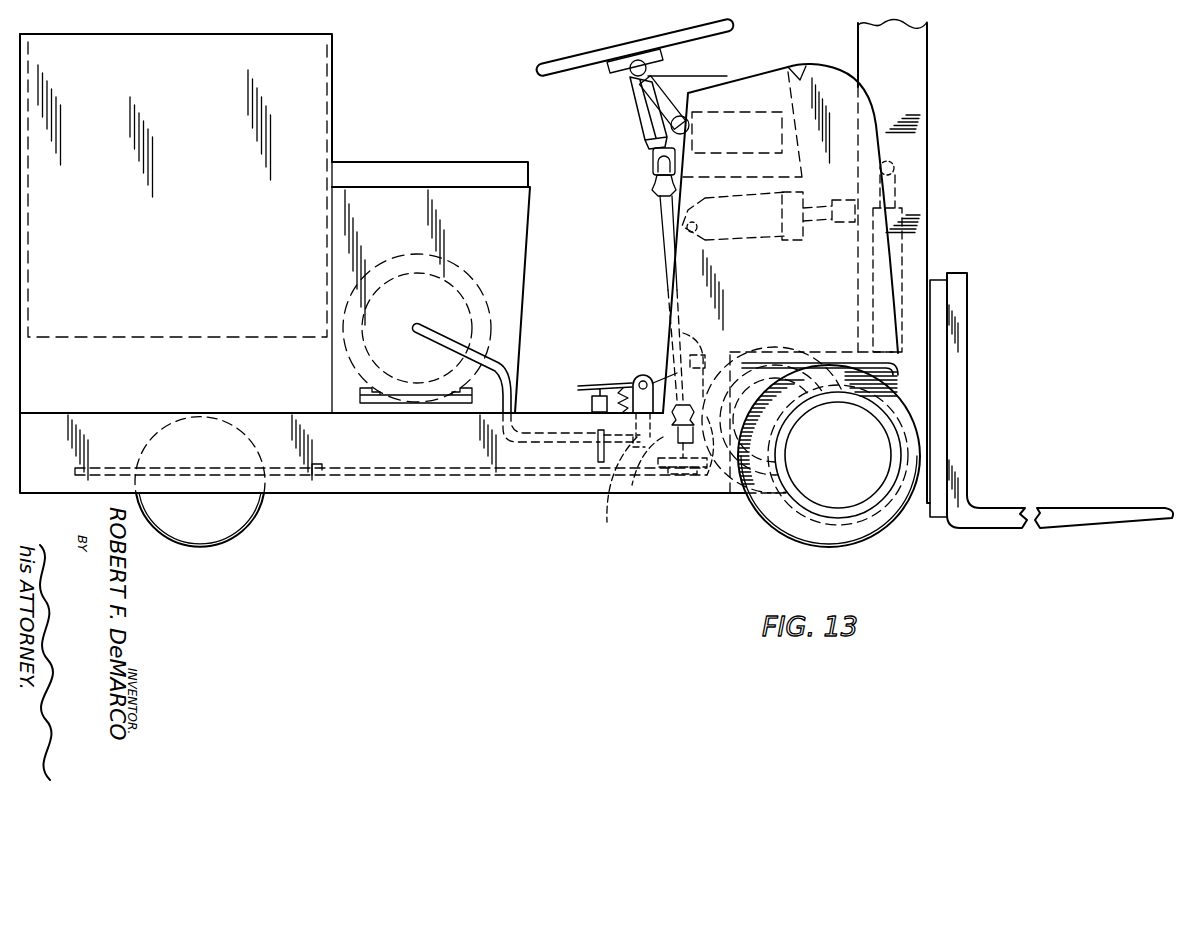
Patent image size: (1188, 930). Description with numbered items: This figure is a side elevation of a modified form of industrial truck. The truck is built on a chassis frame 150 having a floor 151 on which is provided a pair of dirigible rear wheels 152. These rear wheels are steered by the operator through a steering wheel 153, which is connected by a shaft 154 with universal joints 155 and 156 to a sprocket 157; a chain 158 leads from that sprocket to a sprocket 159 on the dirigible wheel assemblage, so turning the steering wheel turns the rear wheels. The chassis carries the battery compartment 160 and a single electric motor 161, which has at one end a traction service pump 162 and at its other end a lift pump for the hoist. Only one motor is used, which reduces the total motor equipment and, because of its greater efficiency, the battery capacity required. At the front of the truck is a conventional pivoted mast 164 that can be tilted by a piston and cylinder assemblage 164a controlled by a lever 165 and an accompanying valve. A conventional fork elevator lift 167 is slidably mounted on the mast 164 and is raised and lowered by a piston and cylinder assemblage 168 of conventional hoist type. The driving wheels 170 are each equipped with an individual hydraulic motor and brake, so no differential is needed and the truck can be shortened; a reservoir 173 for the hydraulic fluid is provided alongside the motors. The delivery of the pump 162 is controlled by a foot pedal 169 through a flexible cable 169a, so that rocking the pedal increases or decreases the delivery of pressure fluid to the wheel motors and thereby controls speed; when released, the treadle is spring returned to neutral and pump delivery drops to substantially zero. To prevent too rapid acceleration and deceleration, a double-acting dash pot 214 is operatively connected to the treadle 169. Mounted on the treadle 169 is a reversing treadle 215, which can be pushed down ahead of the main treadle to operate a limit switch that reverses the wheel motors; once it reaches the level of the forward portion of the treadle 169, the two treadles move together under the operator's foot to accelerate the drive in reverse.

The chassis frame 150 is at (386, 444).
The floor 151 is at (135, 413).
The dirigible rear wheels 152 is at (240, 520).
The steering wheel 153 is at (568, 47).
The shaft 154 is at (662, 217).
The universal joint 155 is at (652, 167).
The universal joint 156 is at (632, 486).
The sprocket 157 is at (688, 490).
The chain 158 is at (490, 476).
The sprocket 159 is at (320, 472).
The battery compartment 160 is at (305, 88).
The electric motor 161 is at (462, 269).
The traction service pump 162 is at (472, 322).
The pivoted mast 164 is at (918, 71).
The piston and cylinder assemblage 164a is at (748, 243).
The lever 165 is at (633, 99).
The fork elevator lift 167 is at (962, 434).
The piston and cylinder assemblage 168 is at (902, 214).
The foot pedal 169 is at (588, 384).
The flexible cable 169a is at (629, 489).
The driving wheels 170 is at (877, 525).
The reservoir 173 is at (800, 66).
The double-acting dash pot 214 is at (592, 404).
The reversing treadle 215 is at (683, 336).